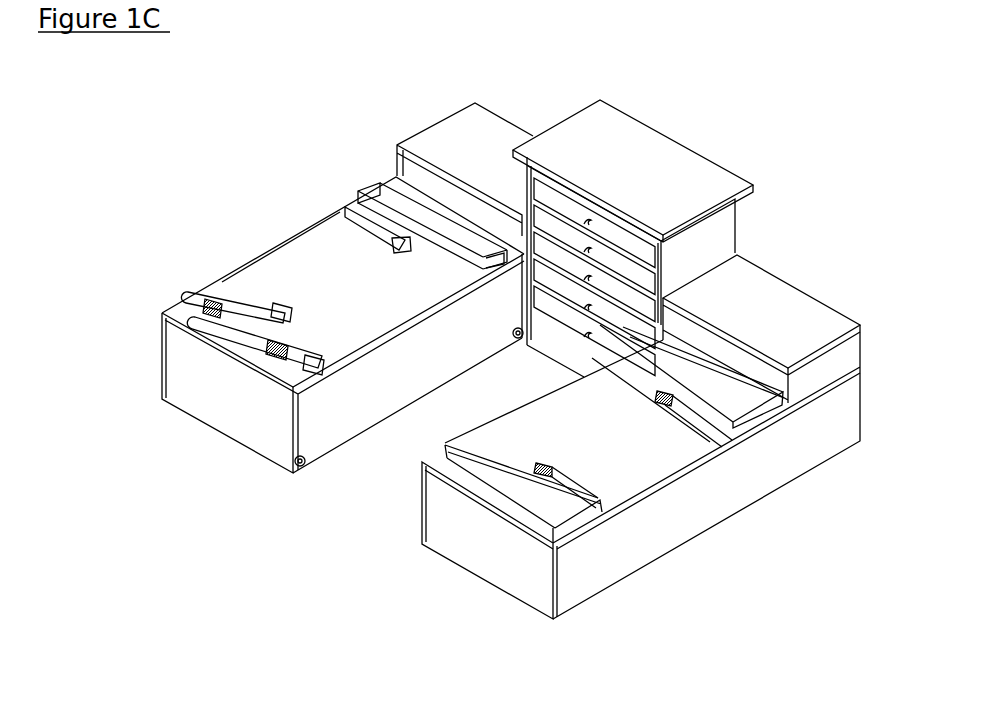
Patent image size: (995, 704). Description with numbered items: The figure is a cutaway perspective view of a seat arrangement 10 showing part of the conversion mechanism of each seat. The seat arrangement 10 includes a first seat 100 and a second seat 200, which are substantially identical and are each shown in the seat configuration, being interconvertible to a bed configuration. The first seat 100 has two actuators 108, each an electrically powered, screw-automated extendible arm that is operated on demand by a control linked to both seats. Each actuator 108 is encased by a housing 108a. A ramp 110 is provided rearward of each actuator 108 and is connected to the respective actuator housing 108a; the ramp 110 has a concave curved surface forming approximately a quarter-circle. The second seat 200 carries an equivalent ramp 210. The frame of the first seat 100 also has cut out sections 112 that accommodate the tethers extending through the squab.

The seat arrangement 10 is at (759, 131).
The first seat 100 is at (204, 433).
The actuator 108 is at (252, 328).
The actuator housing 108a is at (380, 184).
The ramp 110 is at (355, 194).
The cut out sections 112 is at (222, 282).
The second seat 200 is at (446, 595).
The ramp 210 is at (573, 517).